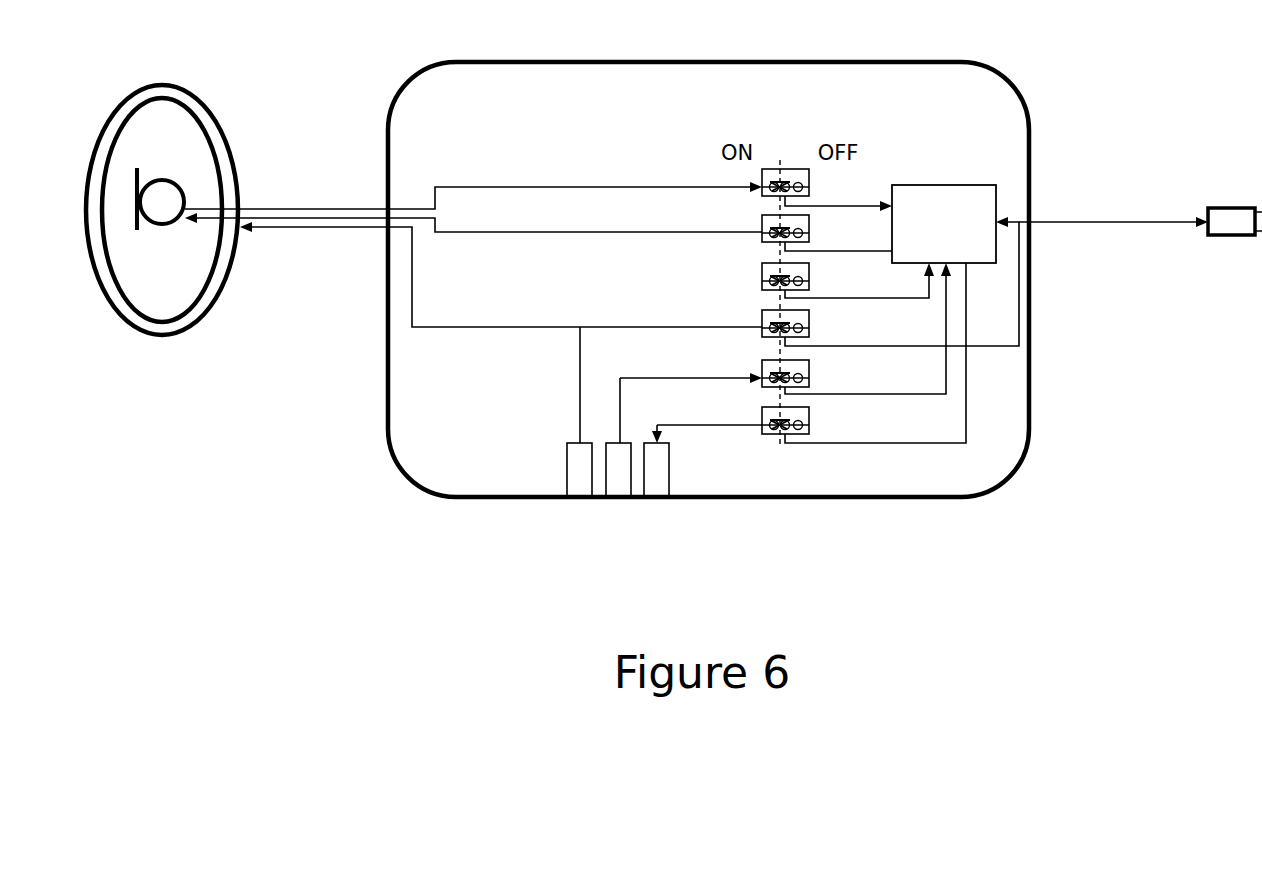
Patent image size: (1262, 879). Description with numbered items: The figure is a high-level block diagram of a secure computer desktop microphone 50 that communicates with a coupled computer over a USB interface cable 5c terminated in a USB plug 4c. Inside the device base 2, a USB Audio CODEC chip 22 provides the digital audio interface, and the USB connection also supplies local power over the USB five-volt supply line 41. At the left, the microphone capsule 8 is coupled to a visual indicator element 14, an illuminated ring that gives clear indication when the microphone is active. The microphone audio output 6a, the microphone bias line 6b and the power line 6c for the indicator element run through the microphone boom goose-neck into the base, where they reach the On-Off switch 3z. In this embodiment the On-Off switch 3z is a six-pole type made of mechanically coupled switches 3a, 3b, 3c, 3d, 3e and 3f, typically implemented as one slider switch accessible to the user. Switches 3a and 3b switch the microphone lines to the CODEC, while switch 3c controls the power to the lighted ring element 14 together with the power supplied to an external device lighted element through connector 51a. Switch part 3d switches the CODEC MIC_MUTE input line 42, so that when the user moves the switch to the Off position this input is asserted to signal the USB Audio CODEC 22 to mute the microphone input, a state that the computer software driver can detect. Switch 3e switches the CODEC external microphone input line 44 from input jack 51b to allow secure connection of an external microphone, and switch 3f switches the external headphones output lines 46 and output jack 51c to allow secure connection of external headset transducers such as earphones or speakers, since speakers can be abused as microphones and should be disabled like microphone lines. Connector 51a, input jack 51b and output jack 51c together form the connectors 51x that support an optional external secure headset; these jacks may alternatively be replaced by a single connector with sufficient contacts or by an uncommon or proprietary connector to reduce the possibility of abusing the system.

The secure computer desktop microphone 50 is at (250, 46).
The visual indicator element 14 is at (208, 107).
The microphone capsule 8 is at (160, 180).
The microphone audio output 6a is at (264, 206).
The microphone bias line 6b is at (300, 222).
The power line 6c is at (345, 233).
The device base 2 is at (1031, 280).
The switch 3a is at (793, 169).
The switch 3b is at (762, 216).
The switch 3c is at (762, 311).
The switch part 3d is at (762, 264).
The switch 3e is at (762, 361).
The switch 3f is at (762, 408).
The On-Off switch 3z is at (781, 457).
The USB Audio CODEC chip 22 is at (906, 185).
The MIC_MUTE input line 42 is at (929, 288).
The USB +5V supply line 41 is at (888, 346).
The external microphone input line 44 is at (888, 394).
The external headphones output lines 46 is at (888, 443).
The USB interface cable 5c is at (1121, 222).
The USB plug 4c is at (1237, 208).
The connector 51a is at (563, 499).
The input jack 51b is at (610, 499).
The output jack 51c is at (654, 499).
The connectors 51x is at (634, 476).